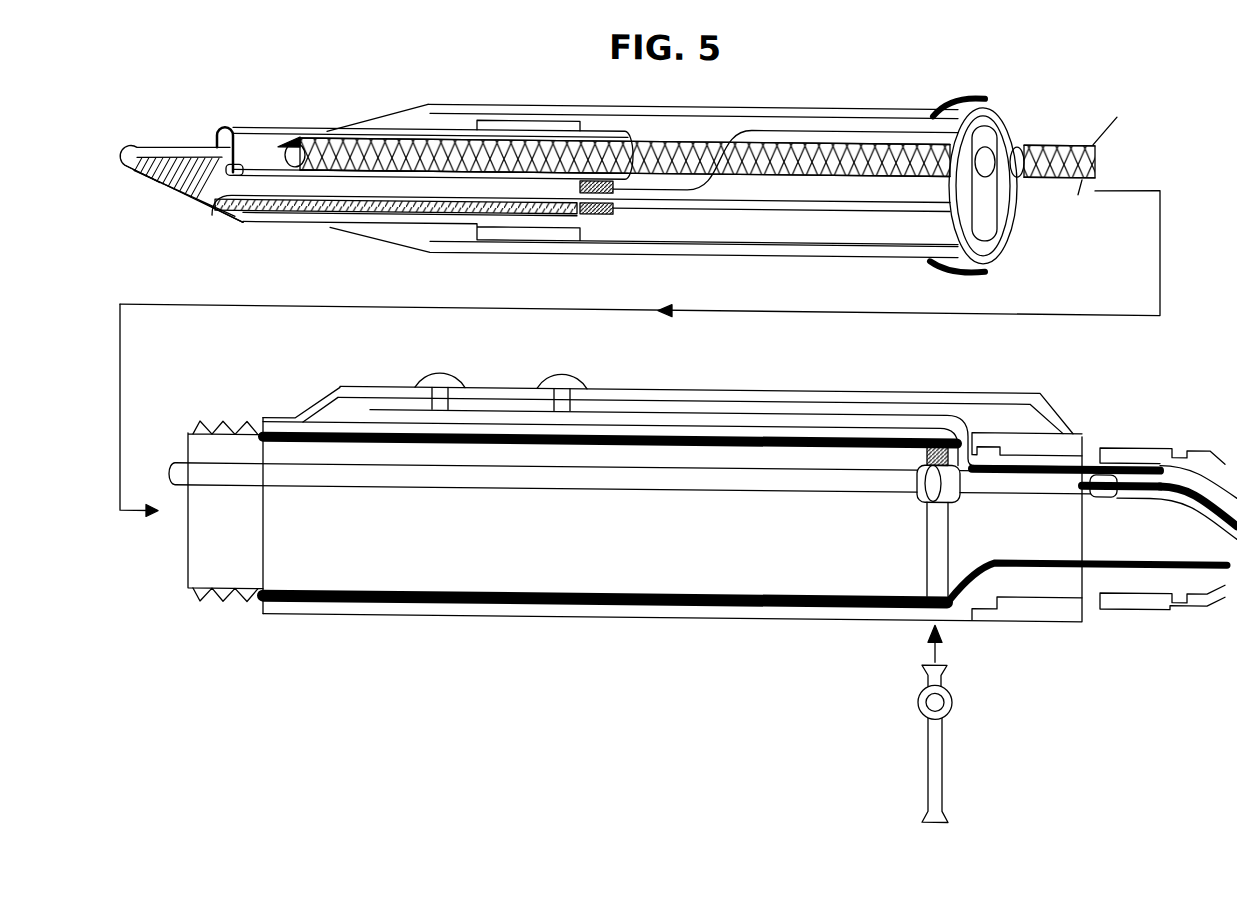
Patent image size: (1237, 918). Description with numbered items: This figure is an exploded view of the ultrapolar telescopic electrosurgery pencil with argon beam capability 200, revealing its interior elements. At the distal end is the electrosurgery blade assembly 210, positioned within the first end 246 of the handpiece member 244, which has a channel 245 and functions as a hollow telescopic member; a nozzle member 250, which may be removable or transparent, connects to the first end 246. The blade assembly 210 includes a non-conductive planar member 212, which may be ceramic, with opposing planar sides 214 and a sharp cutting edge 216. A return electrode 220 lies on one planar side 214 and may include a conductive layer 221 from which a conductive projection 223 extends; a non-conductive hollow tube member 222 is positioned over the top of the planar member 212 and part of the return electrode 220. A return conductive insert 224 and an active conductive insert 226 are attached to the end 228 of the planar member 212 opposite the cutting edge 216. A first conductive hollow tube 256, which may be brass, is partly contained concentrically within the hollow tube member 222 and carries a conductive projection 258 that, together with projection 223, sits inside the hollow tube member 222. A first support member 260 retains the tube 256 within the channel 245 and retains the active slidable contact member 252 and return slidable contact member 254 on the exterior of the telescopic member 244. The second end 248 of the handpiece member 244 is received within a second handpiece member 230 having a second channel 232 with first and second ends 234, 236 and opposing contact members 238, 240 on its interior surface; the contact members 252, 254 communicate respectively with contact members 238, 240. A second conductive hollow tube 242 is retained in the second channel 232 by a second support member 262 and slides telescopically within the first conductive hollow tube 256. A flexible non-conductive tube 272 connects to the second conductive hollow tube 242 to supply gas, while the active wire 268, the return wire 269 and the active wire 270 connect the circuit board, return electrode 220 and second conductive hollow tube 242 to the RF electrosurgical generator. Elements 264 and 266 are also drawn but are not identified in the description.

The ultrapolar telescopic electrosurgery pencil with argon beam capability 200 is at (795, 62).
The electrosurgery blade assembly 210 is at (204, 132).
The non-conductive planar member 212 is at (149, 151).
The opposing planar sides 214 is at (394, 176).
The sharp cutting edge 216 is at (145, 183).
The return electrode 220 is at (186, 187).
The conductive layer 221 is at (230, 219).
The non-conductive hollow tube member 222 is at (233, 132).
The conductive projection 223 is at (296, 151).
The return conductive insert 224 is at (607, 217).
The active conductive insert 226 is at (613, 195).
The end of the non-conductive planar member 228 is at (586, 229).
The second handpiece member 230 is at (439, 605).
The second channel 232 is at (549, 549).
The first end of the second handpiece member 234 is at (183, 543).
The second end of the second handpiece member 236 is at (1082, 588).
The opposing contact member 238 is at (281, 433).
The opposing contact member 240 is at (339, 595).
The second conductive hollow tube 242 is at (1052, 141).
The handpiece member 244 is at (450, 103).
The channel 245 is at (777, 184).
The first end of the handpiece member 246 is at (311, 215).
The second end of the handpiece member 248 is at (1020, 180).
The nozzle member 250 is at (405, 108).
The active slidable contact member 252 is at (957, 93).
The return slidable contact member 254 is at (962, 272).
The first conductive hollow tube 256 is at (317, 139).
The conductive projection 258 is at (299, 139).
The first support member 260 is at (988, 219).
The second support member 262 is at (918, 702).
The strain relief 264 is at (1140, 600).
The cover 266 is at (613, 418).
The active wire 268 is at (913, 424).
The wire 269 is at (1024, 560).
The active wire 270 is at (1160, 450).
The flexible non-conductive tube 272 is at (1186, 474).